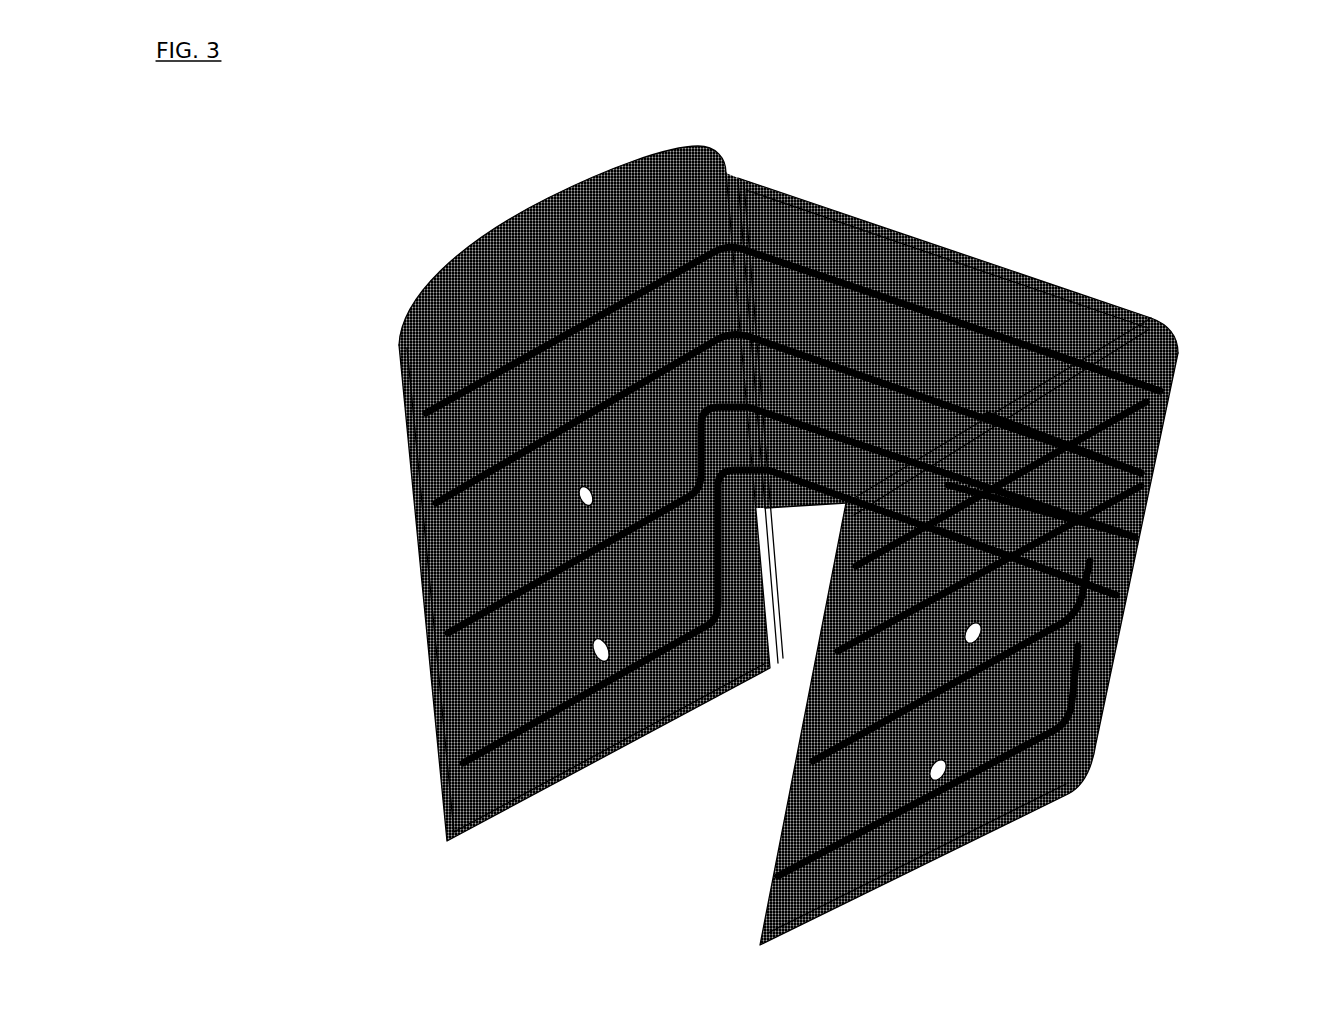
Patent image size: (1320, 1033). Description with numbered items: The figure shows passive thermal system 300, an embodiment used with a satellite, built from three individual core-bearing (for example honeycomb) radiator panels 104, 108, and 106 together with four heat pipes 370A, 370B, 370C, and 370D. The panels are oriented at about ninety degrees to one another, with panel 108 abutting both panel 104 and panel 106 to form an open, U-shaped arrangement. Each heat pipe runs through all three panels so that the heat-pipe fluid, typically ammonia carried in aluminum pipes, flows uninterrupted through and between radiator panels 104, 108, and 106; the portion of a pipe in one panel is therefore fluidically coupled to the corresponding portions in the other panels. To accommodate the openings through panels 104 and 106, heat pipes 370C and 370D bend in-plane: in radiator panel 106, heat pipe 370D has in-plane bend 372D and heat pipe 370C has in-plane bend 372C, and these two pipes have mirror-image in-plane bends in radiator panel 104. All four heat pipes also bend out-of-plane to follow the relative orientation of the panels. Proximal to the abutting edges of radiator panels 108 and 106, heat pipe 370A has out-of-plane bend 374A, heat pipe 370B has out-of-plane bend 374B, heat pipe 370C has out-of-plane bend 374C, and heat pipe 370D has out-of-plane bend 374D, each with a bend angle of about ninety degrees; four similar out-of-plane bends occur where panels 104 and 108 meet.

The passive thermal system 300 is at (320, 226).
The radiator panel 104 is at (520, 230).
The radiator panel 106 is at (940, 825).
The radiator panel 108 is at (925, 235).
The heat pipe 370A is at (418, 406).
The heat pipe 370B is at (428, 496).
The heat pipe 370C is at (440, 626).
The heat pipe 370D is at (455, 756).
The in-plane bend 372C is at (1075, 570).
The in-plane bend 372D is at (1062, 680).
The out-of-plane bend 374A is at (1153, 388).
The out-of-plane bend 374B is at (1133, 472).
The out-of-plane bend 374C is at (1127, 532).
The out-of-plane bend 374D is at (1105, 605).